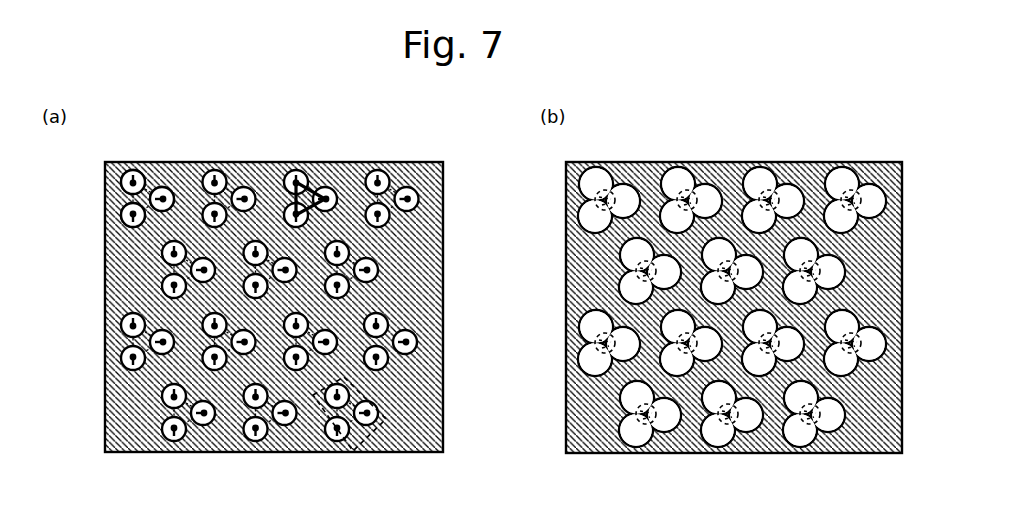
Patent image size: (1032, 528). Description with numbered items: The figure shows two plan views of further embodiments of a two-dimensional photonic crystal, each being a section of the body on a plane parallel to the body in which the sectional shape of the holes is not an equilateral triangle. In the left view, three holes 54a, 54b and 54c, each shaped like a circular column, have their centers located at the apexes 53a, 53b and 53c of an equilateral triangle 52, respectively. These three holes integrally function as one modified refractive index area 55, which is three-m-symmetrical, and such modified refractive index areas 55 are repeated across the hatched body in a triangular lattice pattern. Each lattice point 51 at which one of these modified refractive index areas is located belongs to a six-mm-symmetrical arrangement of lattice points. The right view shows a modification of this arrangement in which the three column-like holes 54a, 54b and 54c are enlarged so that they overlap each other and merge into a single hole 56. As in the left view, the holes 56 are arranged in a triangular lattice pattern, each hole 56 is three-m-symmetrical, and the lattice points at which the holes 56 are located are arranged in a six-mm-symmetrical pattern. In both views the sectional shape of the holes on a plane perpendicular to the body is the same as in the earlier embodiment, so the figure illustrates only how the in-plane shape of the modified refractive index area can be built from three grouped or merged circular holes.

The lattice point 51 is at (389, 199).
The equilateral triangle 52 is at (312, 196).
The apex of the equilateral triangle 53a is at (170, 189).
The apex of the equilateral triangle 53b is at (121, 184).
The apex of the equilateral triangle 53c is at (122, 219).
The hole 54a is at (418, 340).
The hole 54b is at (382, 318).
The hole 54c is at (386, 370).
The modified refractive index area 55 is at (362, 452).
The hole 56 is at (612, 173).